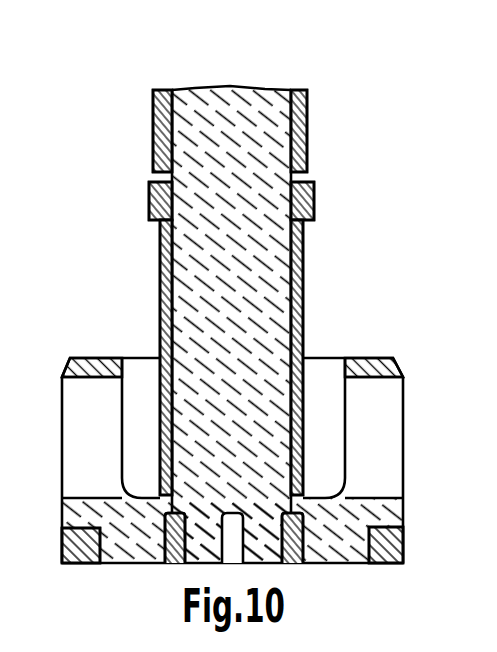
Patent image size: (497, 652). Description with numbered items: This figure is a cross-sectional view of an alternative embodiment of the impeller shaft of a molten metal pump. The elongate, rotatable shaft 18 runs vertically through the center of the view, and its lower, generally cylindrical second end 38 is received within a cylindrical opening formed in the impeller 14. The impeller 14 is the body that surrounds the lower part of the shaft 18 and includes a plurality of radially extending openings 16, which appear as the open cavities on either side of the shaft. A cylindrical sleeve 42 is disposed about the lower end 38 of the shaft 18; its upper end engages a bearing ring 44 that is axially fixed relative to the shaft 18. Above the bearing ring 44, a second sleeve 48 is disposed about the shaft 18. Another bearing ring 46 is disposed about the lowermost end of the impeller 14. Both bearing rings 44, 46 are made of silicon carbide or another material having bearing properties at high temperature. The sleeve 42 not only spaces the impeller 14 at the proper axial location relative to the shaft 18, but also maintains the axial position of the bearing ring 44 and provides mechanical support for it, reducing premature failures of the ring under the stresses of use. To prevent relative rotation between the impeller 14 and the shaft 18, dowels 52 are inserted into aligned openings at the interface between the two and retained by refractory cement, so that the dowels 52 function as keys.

The impeller 14 is at (128, 560).
The radially extending openings 16 is at (78, 428).
The shaft 18 is at (266, 102).
The second end 38 is at (307, 290).
The sleeve 42 is at (349, 233).
The bearing ring 44 is at (313, 210).
The bearing ring 46 is at (377, 562).
The second sleeve 48 is at (309, 126).
The dowels 52 is at (178, 563).